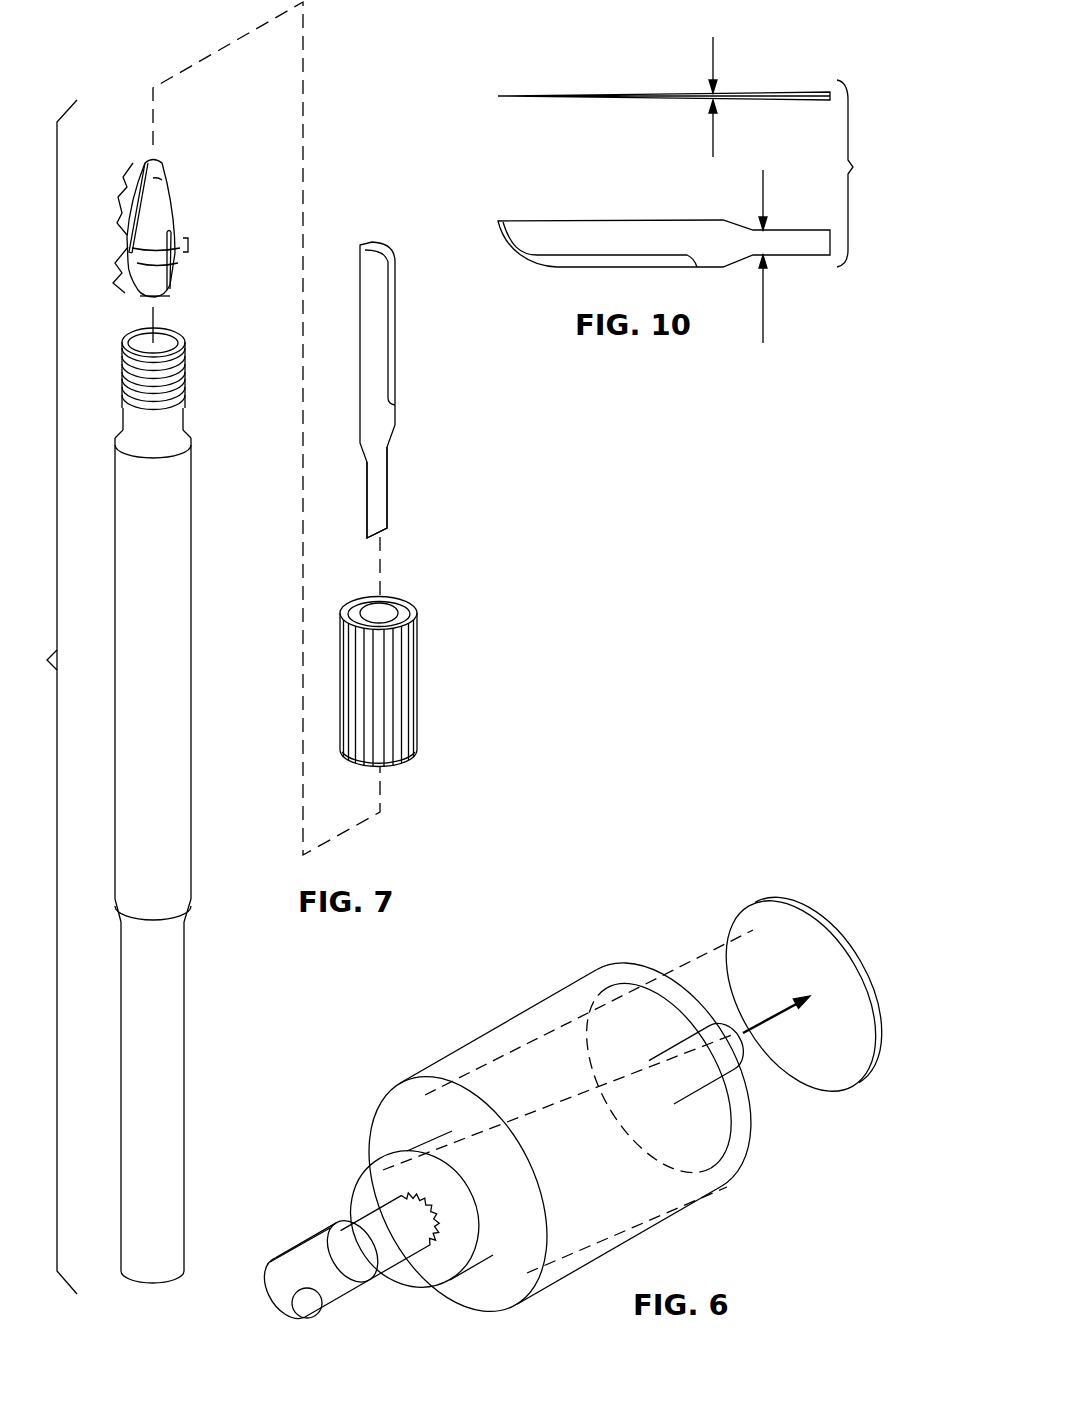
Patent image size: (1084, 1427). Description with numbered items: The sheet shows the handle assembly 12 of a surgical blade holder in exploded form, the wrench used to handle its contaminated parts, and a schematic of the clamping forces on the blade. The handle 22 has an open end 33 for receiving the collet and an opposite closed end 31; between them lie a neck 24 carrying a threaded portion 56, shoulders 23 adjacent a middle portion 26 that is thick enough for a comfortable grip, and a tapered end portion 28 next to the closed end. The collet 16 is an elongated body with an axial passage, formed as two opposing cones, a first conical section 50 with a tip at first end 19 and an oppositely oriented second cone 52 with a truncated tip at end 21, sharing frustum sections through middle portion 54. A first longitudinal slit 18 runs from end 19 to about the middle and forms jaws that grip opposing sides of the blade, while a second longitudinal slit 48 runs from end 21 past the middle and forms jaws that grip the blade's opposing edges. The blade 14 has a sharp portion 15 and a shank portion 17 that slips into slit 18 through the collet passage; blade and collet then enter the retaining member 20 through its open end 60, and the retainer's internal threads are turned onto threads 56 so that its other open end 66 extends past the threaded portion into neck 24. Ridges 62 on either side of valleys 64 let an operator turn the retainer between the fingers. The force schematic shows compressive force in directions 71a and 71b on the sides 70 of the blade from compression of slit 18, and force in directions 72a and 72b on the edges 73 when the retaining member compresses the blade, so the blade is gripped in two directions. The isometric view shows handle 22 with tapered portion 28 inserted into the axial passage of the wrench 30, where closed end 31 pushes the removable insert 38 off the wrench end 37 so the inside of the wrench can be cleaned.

In FIG. 7, the handle assembly 12 is at (44, 697).
In FIG. 7, the blade 14 is at (358, 280).
In FIG. 10, the blade 14 is at (863, 173).
In FIG. 7, the sharp portion 15 is at (385, 243).
In FIG. 7, the collet 16 is at (190, 175).
In FIG. 7, the shank portion 17 is at (385, 490).
In FIG. 7, the first longitudinal slit 18 is at (152, 158).
In FIG. 7, the first end 19 is at (157, 158).
In FIG. 7, the retaining member 20 is at (417, 727).
In FIG. 7, the end of the collet 21 is at (150, 300).
In FIG. 7, the handle 22 is at (213, 632).
In FIG. 6, the handle 22 is at (292, 1226).
In FIG. 7, the shoulders 23 is at (188, 438).
In FIG. 7, the neck 24 is at (180, 418).
In FIG. 7, the middle portion 26 is at (190, 797).
In FIG. 6, the middle portion 26 is at (340, 1307).
In FIG. 7, the tapered end portion 28 is at (174, 1135).
In FIG. 6, the tapered end portion 28 is at (343, 1218).
In FIG. 6, the wrench 30 is at (718, 1203).
In FIG. 7, the closed end 31 is at (148, 1284).
In FIG. 6, the closed end 31 is at (748, 1067).
In FIG. 7, the open end 33 is at (180, 330).
In FIG. 6, the end of the wrench 37 is at (748, 1160).
In FIG. 6, the removable insert 38 is at (835, 918).
In FIG. 7, the second longitudinal slit 48 is at (171, 272).
In FIG. 7, the first conical section 50 is at (108, 199).
In FIG. 7, the second cone 52 is at (104, 270).
In FIG. 7, the middle portion 54 is at (190, 245).
In FIG. 7, the threaded portion 56 is at (185, 372).
In FIG. 7, the open end 60 is at (387, 607).
In FIG. 7, the ridges 62 is at (400, 660).
In FIG. 7, the valleys 64 is at (392, 698).
In FIG. 7, the open end 66 is at (385, 765).
In FIG. 10, the sides 70 is at (797, 92).
In FIG. 10, the direction 71a is at (721, 50).
In FIG. 10, the direction 71b is at (715, 147).
In FIG. 10, the direction 72a is at (766, 186).
In FIG. 10, the direction 72b is at (767, 311).
In FIG. 10, the edges 73 is at (800, 229).